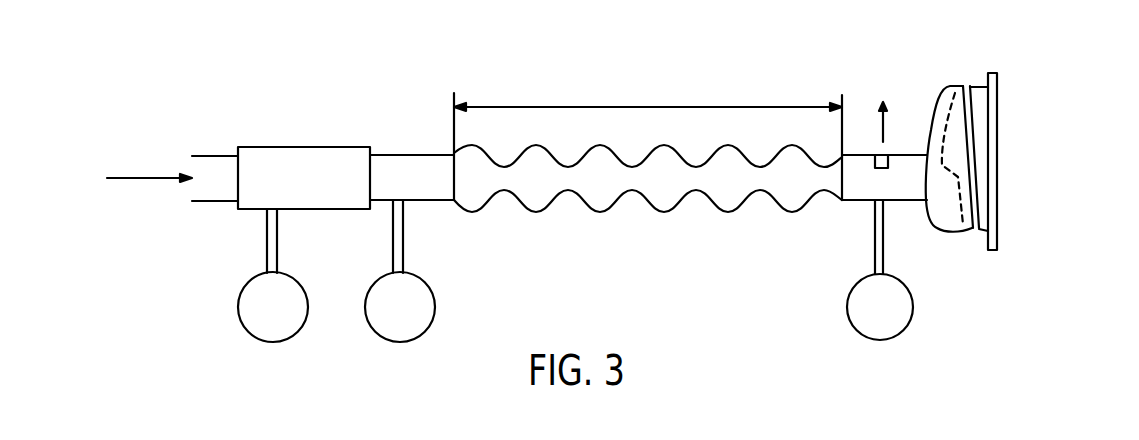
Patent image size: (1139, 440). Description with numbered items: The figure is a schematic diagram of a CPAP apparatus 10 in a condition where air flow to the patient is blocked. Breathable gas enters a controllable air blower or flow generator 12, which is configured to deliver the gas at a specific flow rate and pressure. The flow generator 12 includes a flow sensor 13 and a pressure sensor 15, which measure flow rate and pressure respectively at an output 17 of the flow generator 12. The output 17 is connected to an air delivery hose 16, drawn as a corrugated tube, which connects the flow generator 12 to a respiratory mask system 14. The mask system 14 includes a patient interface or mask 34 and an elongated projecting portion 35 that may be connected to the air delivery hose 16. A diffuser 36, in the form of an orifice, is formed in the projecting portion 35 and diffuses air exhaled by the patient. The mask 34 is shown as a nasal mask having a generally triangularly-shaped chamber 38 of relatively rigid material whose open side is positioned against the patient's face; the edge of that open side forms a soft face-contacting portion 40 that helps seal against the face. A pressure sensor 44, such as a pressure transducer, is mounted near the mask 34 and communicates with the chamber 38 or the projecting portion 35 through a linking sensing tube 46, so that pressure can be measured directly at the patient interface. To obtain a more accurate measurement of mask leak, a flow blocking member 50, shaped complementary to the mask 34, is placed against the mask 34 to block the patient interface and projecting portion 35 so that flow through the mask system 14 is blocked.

The CPAP apparatus 10 is at (239, 71).
The flow generator 12 is at (282, 138).
The flow sensor 13 is at (283, 320).
The respiratory mask system 14 is at (915, 72).
The pressure sensor 15 is at (410, 320).
The air delivery hose 16 is at (594, 221).
The output 17 is at (405, 165).
The mask 34 is at (943, 87).
The elongated projecting portion 35 is at (897, 190).
The diffuser 36 is at (887, 160).
The chamber 38 is at (942, 218).
The face-contacting portion 40 is at (972, 224).
The pressure sensor 44 is at (895, 320).
The sensing tube 46 is at (875, 252).
The flow blocking member 50 is at (977, 77).